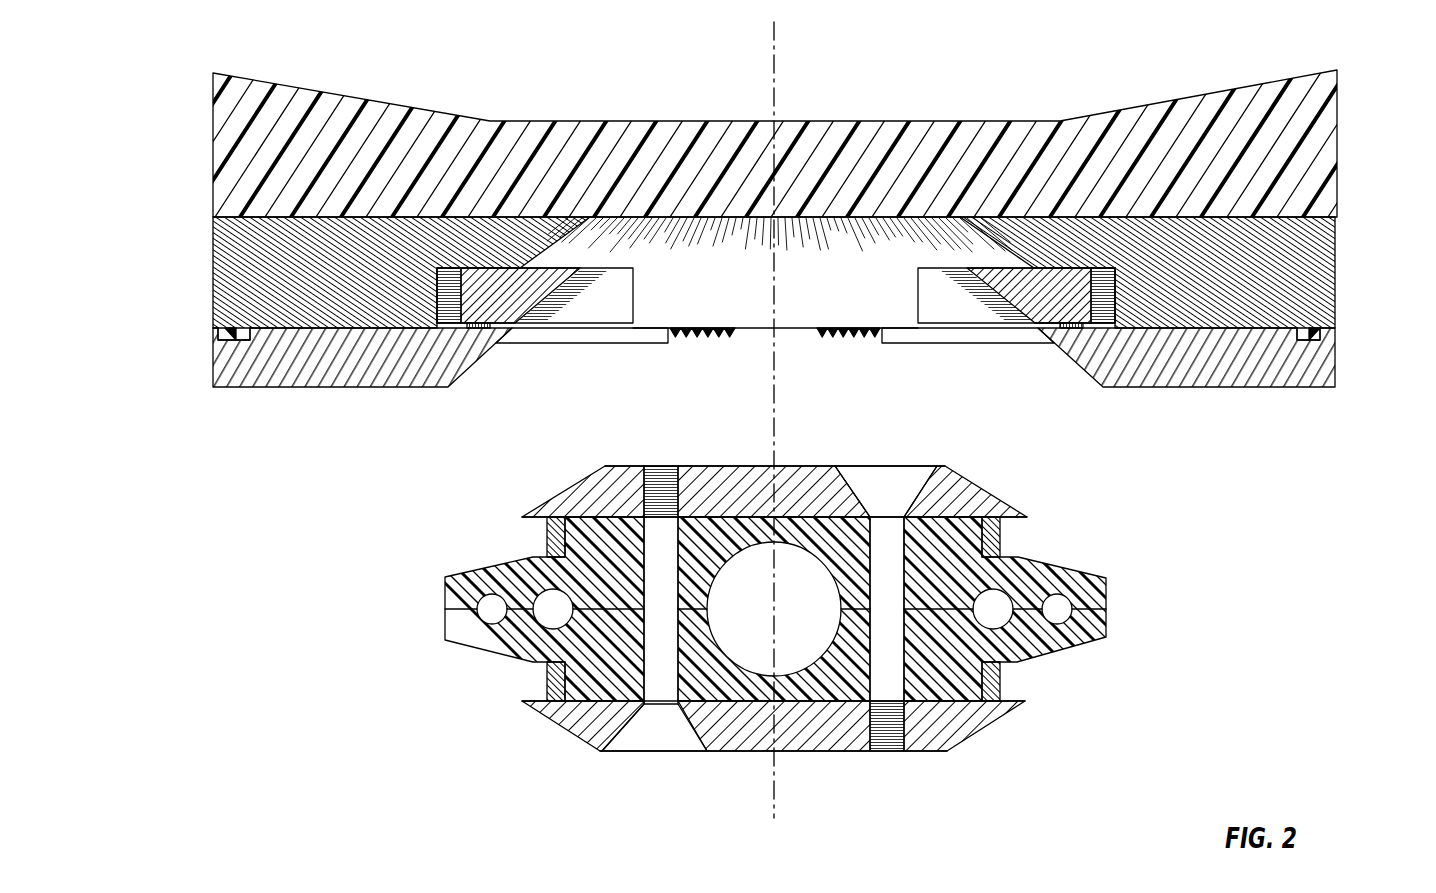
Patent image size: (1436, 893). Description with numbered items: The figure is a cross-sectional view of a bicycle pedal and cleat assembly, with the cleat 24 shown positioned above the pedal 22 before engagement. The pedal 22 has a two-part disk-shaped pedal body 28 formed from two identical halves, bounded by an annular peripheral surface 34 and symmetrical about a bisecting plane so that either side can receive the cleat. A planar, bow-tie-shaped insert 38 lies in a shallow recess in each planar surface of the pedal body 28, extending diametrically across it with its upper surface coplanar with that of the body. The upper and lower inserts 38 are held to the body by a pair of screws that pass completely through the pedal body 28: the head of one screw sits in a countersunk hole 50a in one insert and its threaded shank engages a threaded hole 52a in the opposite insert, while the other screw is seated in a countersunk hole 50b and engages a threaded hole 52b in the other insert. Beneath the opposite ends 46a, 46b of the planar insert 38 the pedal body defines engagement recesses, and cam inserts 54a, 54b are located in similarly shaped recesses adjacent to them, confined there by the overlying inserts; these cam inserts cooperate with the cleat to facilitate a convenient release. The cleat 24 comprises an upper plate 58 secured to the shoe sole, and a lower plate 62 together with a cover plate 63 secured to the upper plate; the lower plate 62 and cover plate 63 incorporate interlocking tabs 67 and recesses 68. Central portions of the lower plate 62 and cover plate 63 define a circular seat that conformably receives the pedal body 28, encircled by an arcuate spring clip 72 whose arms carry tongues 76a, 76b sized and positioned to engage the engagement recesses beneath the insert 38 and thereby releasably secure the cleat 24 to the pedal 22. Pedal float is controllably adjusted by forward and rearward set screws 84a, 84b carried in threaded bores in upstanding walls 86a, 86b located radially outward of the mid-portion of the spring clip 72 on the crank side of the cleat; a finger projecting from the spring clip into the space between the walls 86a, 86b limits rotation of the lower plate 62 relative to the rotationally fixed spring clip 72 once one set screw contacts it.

The pedal 22 is at (815, 611).
The cleat 24 is at (787, 273).
The pedal body 28 is at (483, 573).
The annular peripheral surface 34 is at (1103, 590).
The planar insert 38 is at (743, 466).
The end of planar insert 46a is at (538, 507).
The end of planar insert 46b is at (1013, 512).
The countersunk hole 50a is at (658, 743).
The countersink 50b is at (902, 473).
The threaded hole 52a is at (662, 466).
The threaded hole 52b is at (872, 752).
The cam insert 54a is at (548, 538).
The cam insert 54b is at (548, 683).
The upper plate 58 is at (1376, 150).
The lower plate 62 is at (1376, 260).
The cover plate 63 is at (1376, 388).
The interlocking tab 67 is at (236, 336).
The interlocking recess 68 is at (219, 341).
The spring clip 72 is at (1022, 333).
The tongue 76a is at (565, 365).
The tongue 76b is at (1007, 303).
The forward set screw 84a is at (726, 367).
The rearward set screw 84b is at (862, 337).
The upstanding wall 86a is at (643, 367).
The upstanding wall 86b is at (940, 337).